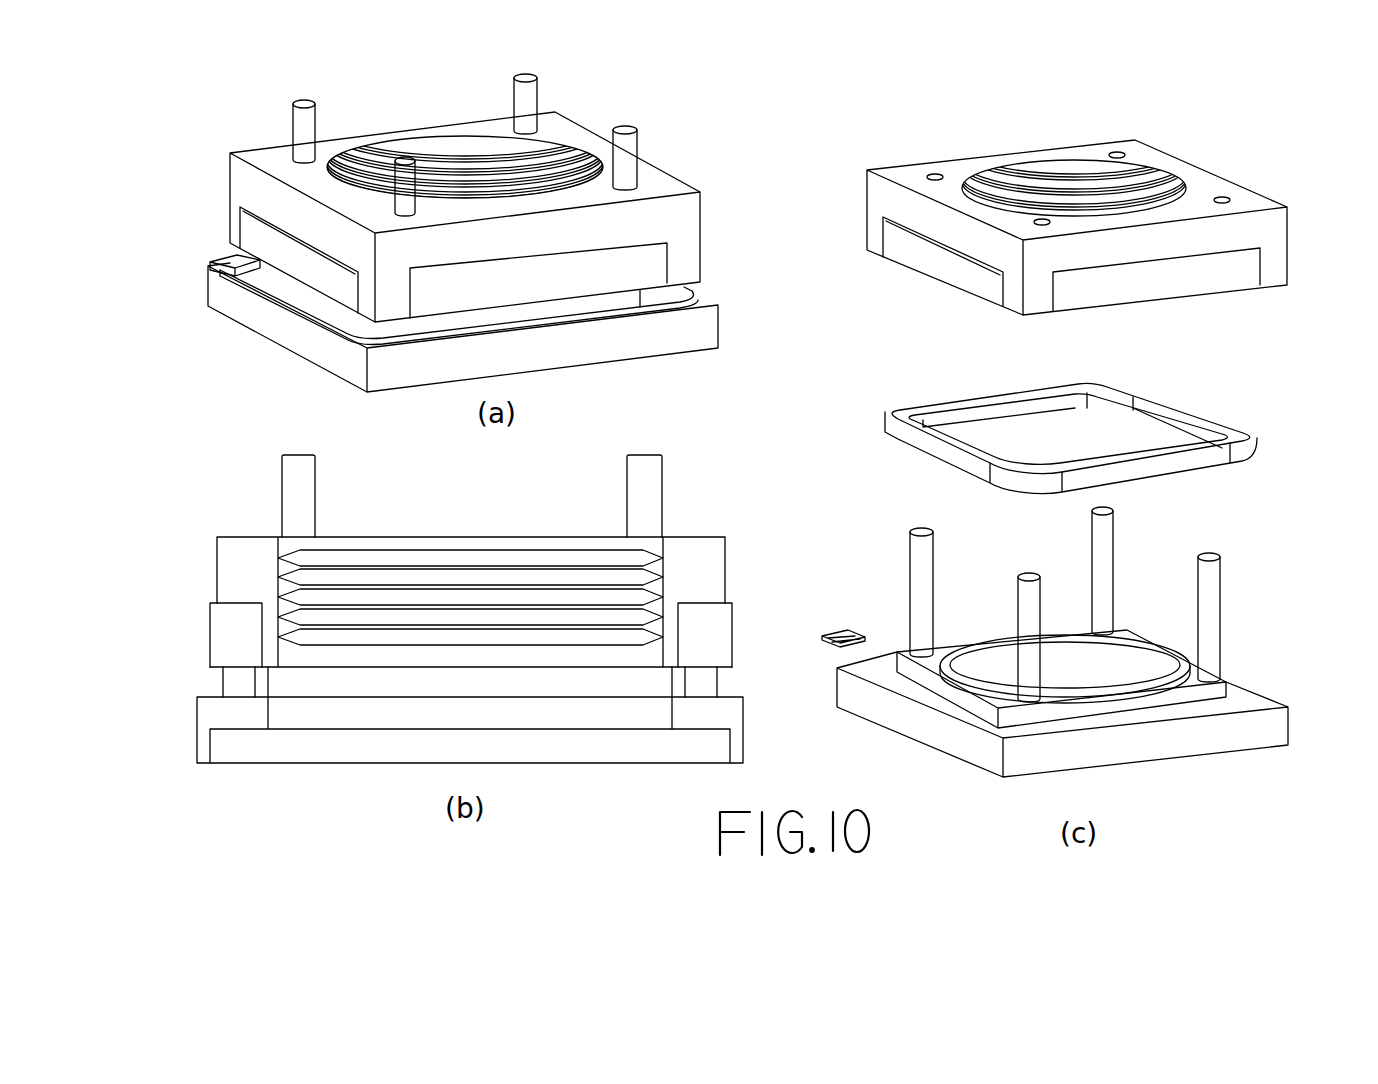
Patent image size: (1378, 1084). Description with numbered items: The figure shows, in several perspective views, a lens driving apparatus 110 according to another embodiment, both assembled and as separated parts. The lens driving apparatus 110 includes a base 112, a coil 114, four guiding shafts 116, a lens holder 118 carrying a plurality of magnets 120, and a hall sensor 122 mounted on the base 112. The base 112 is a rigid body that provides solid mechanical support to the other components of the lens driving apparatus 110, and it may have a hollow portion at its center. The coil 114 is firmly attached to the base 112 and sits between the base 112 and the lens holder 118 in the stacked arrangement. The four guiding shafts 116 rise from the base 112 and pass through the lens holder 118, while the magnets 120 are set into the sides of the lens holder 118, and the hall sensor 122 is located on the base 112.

The lens driving apparatus 110 is at (626, 62).
The base 112 is at (720, 330).
The coil 114 is at (700, 290).
The guiding shafts 116 is at (293, 118).
The lens holder 118 is at (700, 188).
The magnets 120 is at (255, 233).
The hall sensor 122 is at (212, 270).